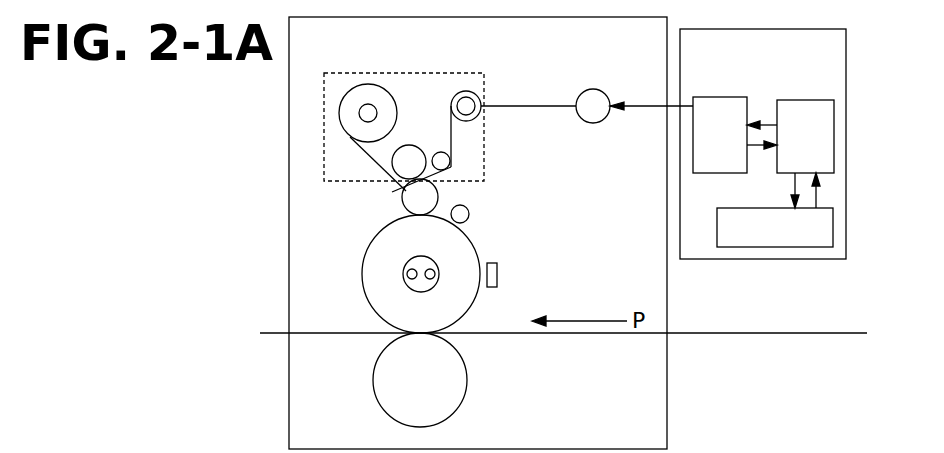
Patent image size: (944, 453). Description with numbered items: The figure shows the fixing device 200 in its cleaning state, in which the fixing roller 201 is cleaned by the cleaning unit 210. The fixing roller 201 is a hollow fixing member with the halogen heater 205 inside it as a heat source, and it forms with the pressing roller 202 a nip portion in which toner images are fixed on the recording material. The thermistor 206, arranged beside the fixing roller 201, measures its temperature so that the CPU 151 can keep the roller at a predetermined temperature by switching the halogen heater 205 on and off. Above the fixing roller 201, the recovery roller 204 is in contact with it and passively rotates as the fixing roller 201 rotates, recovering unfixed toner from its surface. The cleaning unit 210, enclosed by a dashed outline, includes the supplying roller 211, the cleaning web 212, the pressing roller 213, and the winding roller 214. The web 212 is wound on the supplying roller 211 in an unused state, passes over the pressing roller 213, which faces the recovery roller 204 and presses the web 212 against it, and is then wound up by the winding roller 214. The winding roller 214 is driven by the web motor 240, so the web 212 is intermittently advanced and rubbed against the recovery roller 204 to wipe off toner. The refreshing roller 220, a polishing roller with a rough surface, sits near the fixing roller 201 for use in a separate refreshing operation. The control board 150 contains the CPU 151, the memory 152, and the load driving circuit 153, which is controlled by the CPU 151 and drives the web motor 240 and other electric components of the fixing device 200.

The control board 150 is at (813, 29).
The CPU 151 is at (834, 135).
The memory 152 is at (833, 227).
The load driving circuit 153 is at (704, 272).
The fixing device 200 is at (289, 104).
The fixing roller 201 is at (479, 250).
The pressing roller 202 is at (465, 397).
The recovery roller 204 is at (403, 208).
The halogen heater 205 is at (402, 274).
The thermistor 206 is at (498, 273).
The cleaning unit 210 is at (395, 73).
The supplying roller 211 is at (360, 106).
The cleaning web 212 is at (382, 163).
The pressing roller 213 is at (380, 184).
The winding roller 214 is at (466, 91).
The refreshing roller 220 is at (469, 210).
The web motor 240 is at (592, 89).